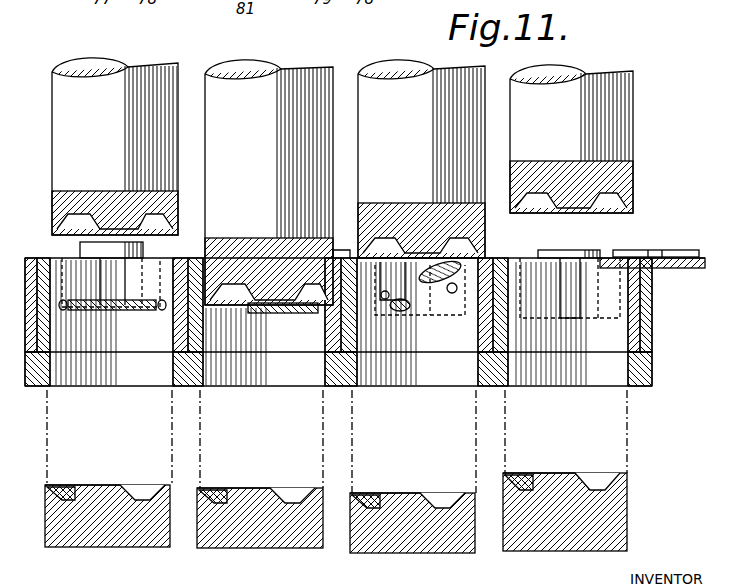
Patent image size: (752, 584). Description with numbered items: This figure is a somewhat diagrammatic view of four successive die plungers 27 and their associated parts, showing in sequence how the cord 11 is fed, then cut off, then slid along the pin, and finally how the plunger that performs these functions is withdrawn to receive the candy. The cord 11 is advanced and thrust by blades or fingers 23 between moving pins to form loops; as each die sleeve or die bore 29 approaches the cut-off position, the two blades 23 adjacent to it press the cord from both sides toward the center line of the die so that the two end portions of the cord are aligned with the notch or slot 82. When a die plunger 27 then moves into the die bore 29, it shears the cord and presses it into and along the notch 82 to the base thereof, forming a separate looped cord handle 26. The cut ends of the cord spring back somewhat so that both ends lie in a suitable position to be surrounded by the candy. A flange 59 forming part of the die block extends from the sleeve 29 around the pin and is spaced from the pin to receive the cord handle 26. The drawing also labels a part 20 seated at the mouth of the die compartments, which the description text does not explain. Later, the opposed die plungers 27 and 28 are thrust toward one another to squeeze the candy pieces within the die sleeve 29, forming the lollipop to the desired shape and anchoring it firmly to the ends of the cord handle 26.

The cord 11 is at (660, 272).
The cap member 20 is at (82, 248).
The blade 23 is at (673, 257).
The looped cord handle 26 is at (140, 310).
The die plunger 27 is at (170, 150).
The die plunger 28 is at (150, 545).
The die sleeve 29 is at (305, 385).
The flange 59 is at (337, 258).
The notch 82 is at (415, 312).